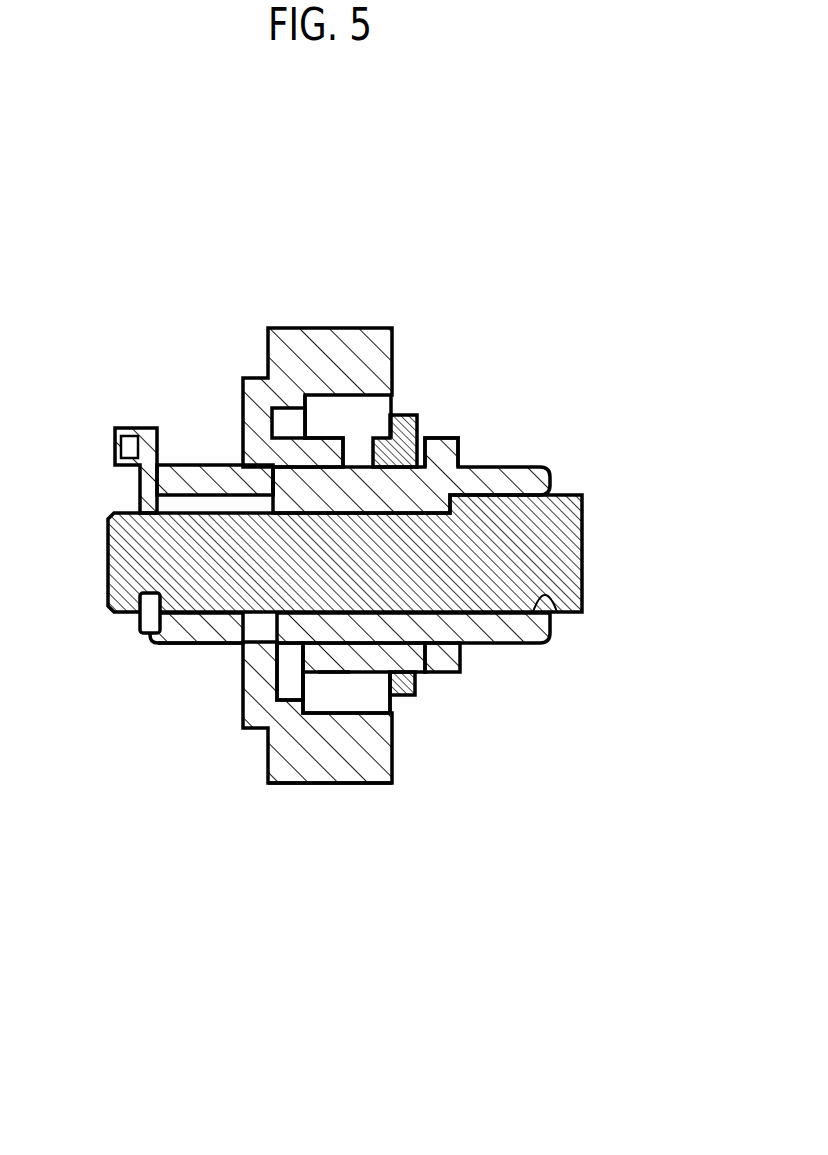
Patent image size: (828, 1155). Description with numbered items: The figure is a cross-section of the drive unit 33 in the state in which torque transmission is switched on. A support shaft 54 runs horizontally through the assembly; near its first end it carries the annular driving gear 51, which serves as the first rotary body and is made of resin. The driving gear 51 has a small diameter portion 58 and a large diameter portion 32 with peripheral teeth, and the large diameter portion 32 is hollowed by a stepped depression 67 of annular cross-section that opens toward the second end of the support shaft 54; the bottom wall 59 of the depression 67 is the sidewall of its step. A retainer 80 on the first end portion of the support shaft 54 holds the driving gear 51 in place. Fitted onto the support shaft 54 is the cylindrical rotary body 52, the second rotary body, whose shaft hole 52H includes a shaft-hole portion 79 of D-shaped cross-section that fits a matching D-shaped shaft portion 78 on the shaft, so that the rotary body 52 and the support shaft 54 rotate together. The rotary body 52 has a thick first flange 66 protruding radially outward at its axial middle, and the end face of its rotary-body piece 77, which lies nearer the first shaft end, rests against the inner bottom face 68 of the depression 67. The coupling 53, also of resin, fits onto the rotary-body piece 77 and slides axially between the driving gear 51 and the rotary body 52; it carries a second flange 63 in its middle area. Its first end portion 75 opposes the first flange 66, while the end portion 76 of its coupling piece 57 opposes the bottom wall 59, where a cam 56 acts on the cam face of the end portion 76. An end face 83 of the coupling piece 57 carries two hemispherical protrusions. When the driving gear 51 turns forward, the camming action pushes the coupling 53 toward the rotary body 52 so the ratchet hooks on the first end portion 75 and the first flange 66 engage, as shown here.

The drive unit 33 is at (210, 957).
The driving gear 51 is at (170, 783).
The rotary body 52 is at (482, 430).
The shaft hole 52H is at (548, 583).
The coupling 53 is at (417, 403).
The support shaft 54 is at (560, 532).
The cam 56 is at (320, 428).
The coupling piece 57 is at (366, 703).
The small diameter portion 58 is at (175, 628).
The bottom wall 59 is at (252, 735).
The second flange 63 is at (398, 412).
The first flange 66 is at (442, 658).
The depression 67 is at (388, 690).
The inner bottom face 68 is at (288, 662).
The first end portion 75 is at (420, 668).
The end portion 76 is at (342, 675).
The rotary-body piece 77 is at (358, 465).
The shaft portion 78 is at (198, 495).
The shaft-hole portion 79 is at (245, 505).
The retainer 80 is at (133, 427).
The end face 83 is at (298, 660).
The large diameter portion 32 is at (327, 675).